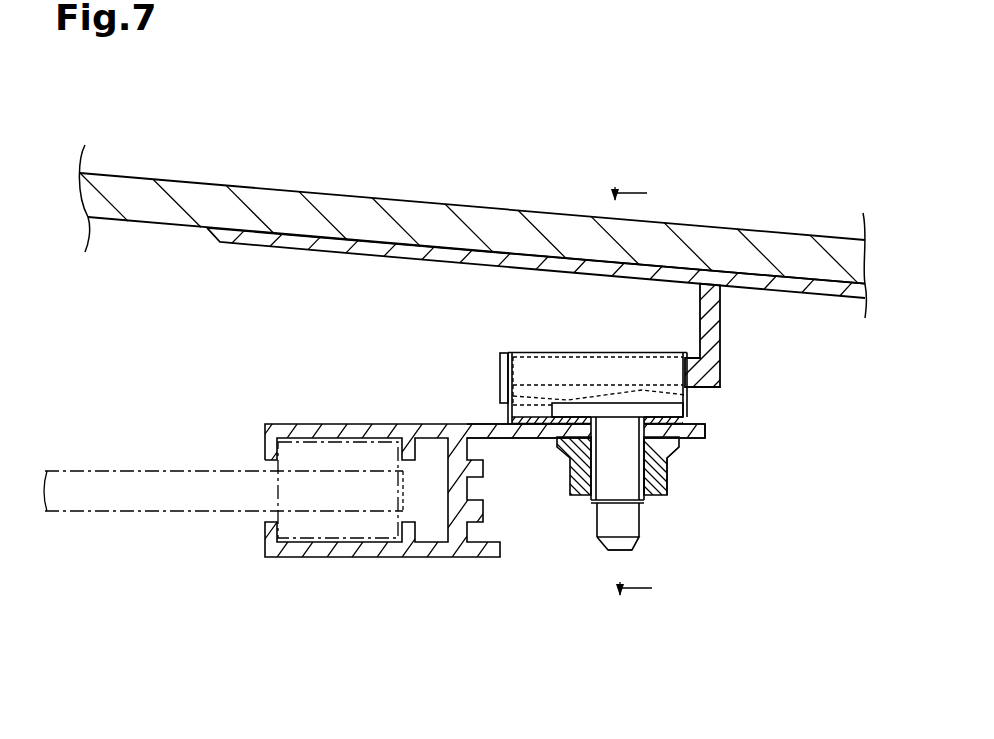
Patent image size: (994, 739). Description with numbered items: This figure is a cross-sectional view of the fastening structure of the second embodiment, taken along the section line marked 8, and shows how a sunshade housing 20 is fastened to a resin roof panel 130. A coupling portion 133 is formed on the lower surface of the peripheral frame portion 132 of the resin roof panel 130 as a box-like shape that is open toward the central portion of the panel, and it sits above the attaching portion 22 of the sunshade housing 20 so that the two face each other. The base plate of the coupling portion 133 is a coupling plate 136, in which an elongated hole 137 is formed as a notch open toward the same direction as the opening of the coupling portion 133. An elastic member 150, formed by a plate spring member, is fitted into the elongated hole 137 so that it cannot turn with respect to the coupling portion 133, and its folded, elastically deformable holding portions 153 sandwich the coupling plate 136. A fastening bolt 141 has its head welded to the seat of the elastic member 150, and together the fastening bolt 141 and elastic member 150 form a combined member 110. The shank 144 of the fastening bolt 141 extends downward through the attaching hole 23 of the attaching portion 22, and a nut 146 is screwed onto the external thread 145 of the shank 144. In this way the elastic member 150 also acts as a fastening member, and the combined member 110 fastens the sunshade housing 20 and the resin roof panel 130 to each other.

The resin roof panel 130 is at (418, 198).
The peripheral frame portion 132 is at (445, 253).
The coupling portion 133 is at (723, 360).
The elastic member 150 is at (533, 346).
The coupling plate 136 is at (663, 377).
The elongated hole 137 is at (583, 372).
The holding portion 153 is at (686, 395).
The fastening bolt 141 is at (621, 402).
The sunshade housing 20 is at (335, 424).
The attaching portion 22 is at (487, 430).
The shank 144 is at (557, 413).
The attaching hole 23 is at (575, 470).
The external thread 145 is at (667, 492).
The nut 146 is at (660, 467).
The combined member 110 is at (613, 553).
The section line arrow 8 is at (644, 392).